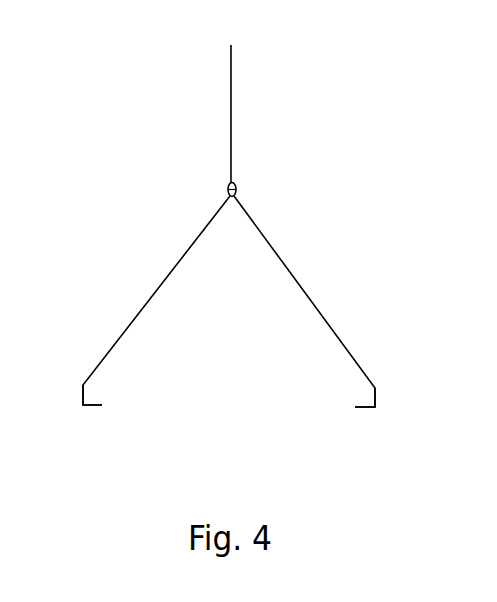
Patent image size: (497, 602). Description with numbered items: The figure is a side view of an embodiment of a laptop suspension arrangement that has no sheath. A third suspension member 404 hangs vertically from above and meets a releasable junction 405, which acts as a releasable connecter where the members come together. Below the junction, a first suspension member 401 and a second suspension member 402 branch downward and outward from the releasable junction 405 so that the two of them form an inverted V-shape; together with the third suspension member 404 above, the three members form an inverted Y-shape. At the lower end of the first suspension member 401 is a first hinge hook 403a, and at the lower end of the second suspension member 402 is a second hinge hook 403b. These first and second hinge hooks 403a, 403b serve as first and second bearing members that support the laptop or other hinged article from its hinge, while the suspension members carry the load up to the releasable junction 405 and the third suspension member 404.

The first suspension member 401 is at (137, 313).
The second suspension member 402 is at (307, 290).
The first hinge hook 403a is at (95, 410).
The second hinge hook 403b is at (362, 409).
The third suspension member 404 is at (237, 105).
The releasable junction 405 is at (237, 186).